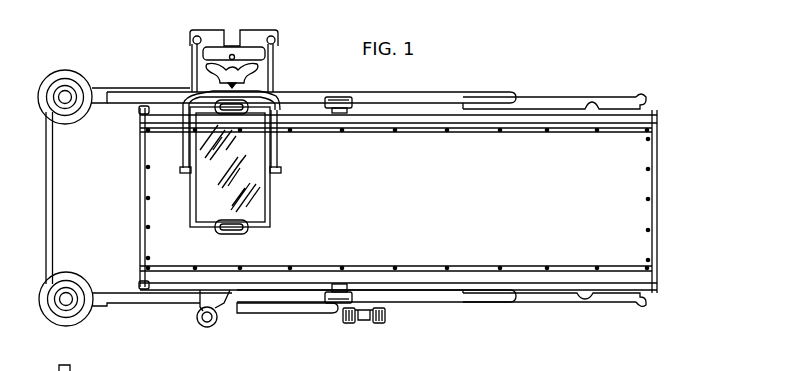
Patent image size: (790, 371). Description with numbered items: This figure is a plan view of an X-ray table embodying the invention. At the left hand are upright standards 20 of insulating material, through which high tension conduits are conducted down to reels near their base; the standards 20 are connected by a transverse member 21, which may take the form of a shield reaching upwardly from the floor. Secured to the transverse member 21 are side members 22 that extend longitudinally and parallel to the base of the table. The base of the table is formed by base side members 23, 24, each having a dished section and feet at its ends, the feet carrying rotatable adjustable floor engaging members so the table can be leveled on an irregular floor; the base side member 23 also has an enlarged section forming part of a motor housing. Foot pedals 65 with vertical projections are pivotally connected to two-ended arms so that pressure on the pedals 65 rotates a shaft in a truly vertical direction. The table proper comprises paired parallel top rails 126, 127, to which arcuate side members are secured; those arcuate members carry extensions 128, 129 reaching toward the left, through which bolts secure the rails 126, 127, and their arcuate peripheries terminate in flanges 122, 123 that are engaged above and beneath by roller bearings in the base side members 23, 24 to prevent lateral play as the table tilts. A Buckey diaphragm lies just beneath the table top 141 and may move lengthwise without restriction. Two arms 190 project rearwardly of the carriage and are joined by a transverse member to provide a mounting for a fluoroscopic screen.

The upright standards 20 is at (80, 118).
The transverse member 21 is at (53, 203).
The side members 22 is at (128, 91).
The base side member 23 is at (423, 303).
The base side member 24 is at (436, 95).
The foot pedals 65 is at (377, 324).
The flange 122 is at (636, 303).
The flange 123 is at (639, 98).
The top rail 126 is at (643, 280).
The top rail 127 is at (640, 122).
The extension 128 is at (555, 288).
The extension 129 is at (535, 113).
The table top 141 is at (638, 187).
The arms 190 is at (192, 63).